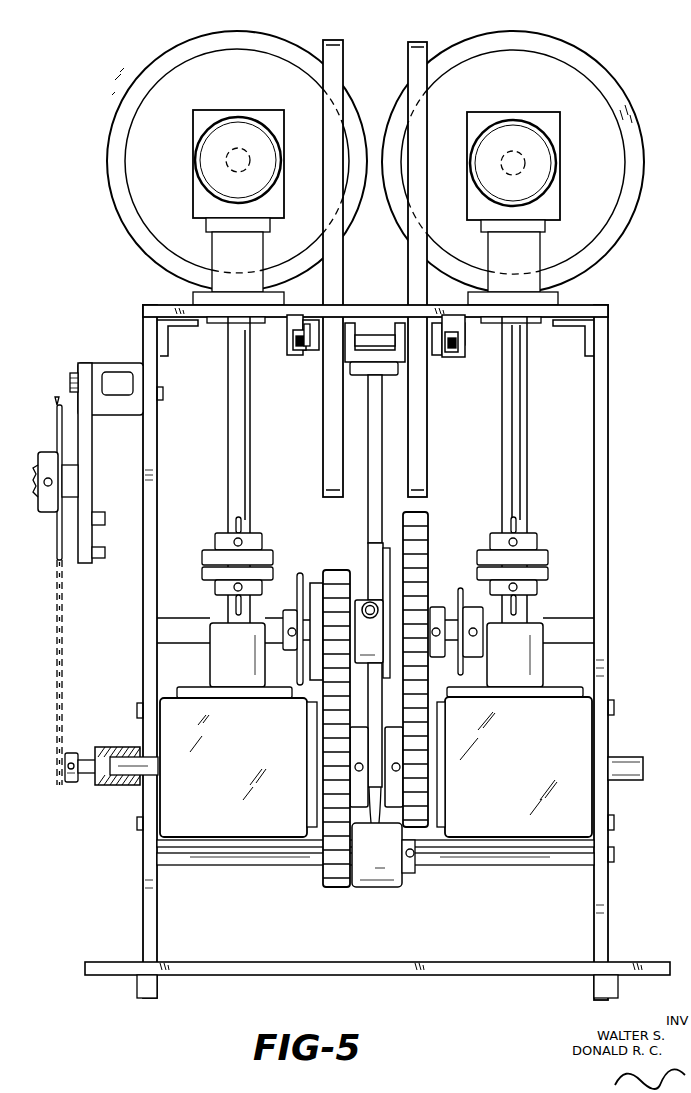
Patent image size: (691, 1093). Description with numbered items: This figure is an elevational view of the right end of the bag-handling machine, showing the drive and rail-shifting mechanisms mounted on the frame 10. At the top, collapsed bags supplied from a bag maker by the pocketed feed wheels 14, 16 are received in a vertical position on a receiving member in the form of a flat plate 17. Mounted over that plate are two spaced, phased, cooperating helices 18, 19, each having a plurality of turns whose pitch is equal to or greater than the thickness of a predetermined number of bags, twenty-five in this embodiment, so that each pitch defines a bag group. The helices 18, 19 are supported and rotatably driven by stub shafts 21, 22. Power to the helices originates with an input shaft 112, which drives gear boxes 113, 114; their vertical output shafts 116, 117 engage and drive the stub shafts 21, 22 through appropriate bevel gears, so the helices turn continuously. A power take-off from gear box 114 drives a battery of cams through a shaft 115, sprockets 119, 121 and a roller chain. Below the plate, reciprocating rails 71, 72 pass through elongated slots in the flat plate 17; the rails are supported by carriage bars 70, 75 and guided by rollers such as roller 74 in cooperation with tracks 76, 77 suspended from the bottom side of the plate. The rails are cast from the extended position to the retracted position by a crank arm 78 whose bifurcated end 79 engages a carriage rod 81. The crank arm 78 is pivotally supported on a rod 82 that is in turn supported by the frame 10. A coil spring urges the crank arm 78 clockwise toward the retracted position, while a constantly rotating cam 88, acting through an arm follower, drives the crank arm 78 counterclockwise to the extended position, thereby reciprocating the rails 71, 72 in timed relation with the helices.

The frame 10 is at (145, 920).
The pocketed feed wheel 14 is at (340, 53).
The pocketed feed wheel 16 is at (422, 52).
The flat plate 17 is at (395, 311).
The helix 18 is at (602, 56).
The helix 19 is at (151, 56).
The stub shaft 21 is at (527, 163).
The stub shaft 22 is at (226, 156).
The carriage bar 70 is at (443, 354).
The reciprocating rail 71 is at (434, 350).
The reciprocating rail 72 is at (295, 325).
The roller 74 is at (298, 356).
The carriage bar 75 is at (306, 352).
The track 76 is at (465, 355).
The track 77 is at (293, 352).
The crank arm 78 is at (373, 471).
The bifurcated end 79 is at (347, 356).
The carriage rod 81 is at (371, 324).
The rod 82 is at (265, 862).
The cam 88 is at (390, 569).
The input shaft 112 is at (648, 775).
The gear box 113 is at (506, 793).
The gear box 114 is at (225, 801).
The shaft 115 is at (116, 789).
The vertical output shaft 116 is at (522, 464).
The vertical output shaft 117 is at (251, 494).
The sprocket 119 is at (63, 789).
The sprocket 121 is at (57, 545).